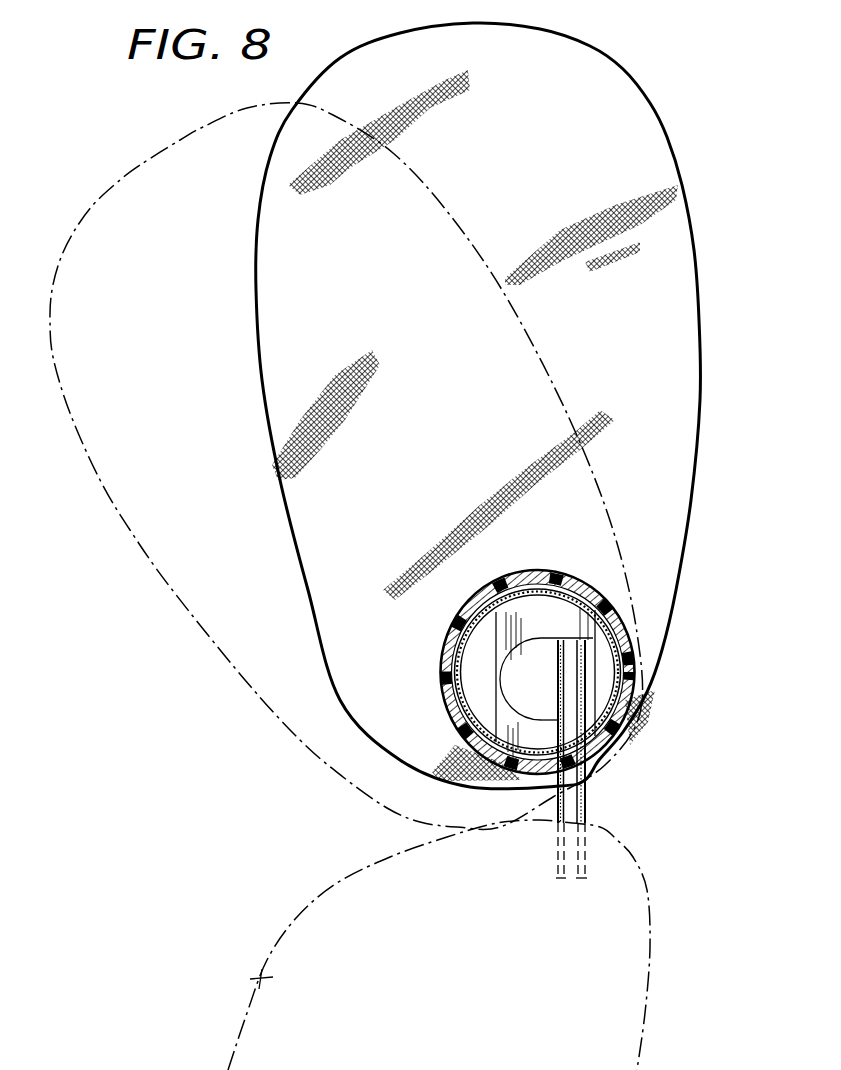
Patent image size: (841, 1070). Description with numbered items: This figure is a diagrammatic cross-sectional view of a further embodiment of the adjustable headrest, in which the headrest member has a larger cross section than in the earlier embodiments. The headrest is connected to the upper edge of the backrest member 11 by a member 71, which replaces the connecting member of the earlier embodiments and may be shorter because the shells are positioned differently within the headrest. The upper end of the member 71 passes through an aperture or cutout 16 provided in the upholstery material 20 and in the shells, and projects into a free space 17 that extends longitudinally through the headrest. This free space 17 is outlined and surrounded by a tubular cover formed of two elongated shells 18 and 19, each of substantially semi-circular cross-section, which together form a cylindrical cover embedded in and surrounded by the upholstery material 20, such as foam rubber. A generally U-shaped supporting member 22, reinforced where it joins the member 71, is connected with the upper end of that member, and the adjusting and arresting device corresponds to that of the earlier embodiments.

The backrest member 11 is at (252, 981).
The aperture or cutout 16 is at (527, 789).
The free space 17 is at (467, 675).
The elongated shell 18 is at (632, 622).
The elongated shell 19 is at (480, 616).
The upholstery material 20 is at (348, 737).
The supporting member 22 is at (594, 687).
The member 71 is at (572, 802).